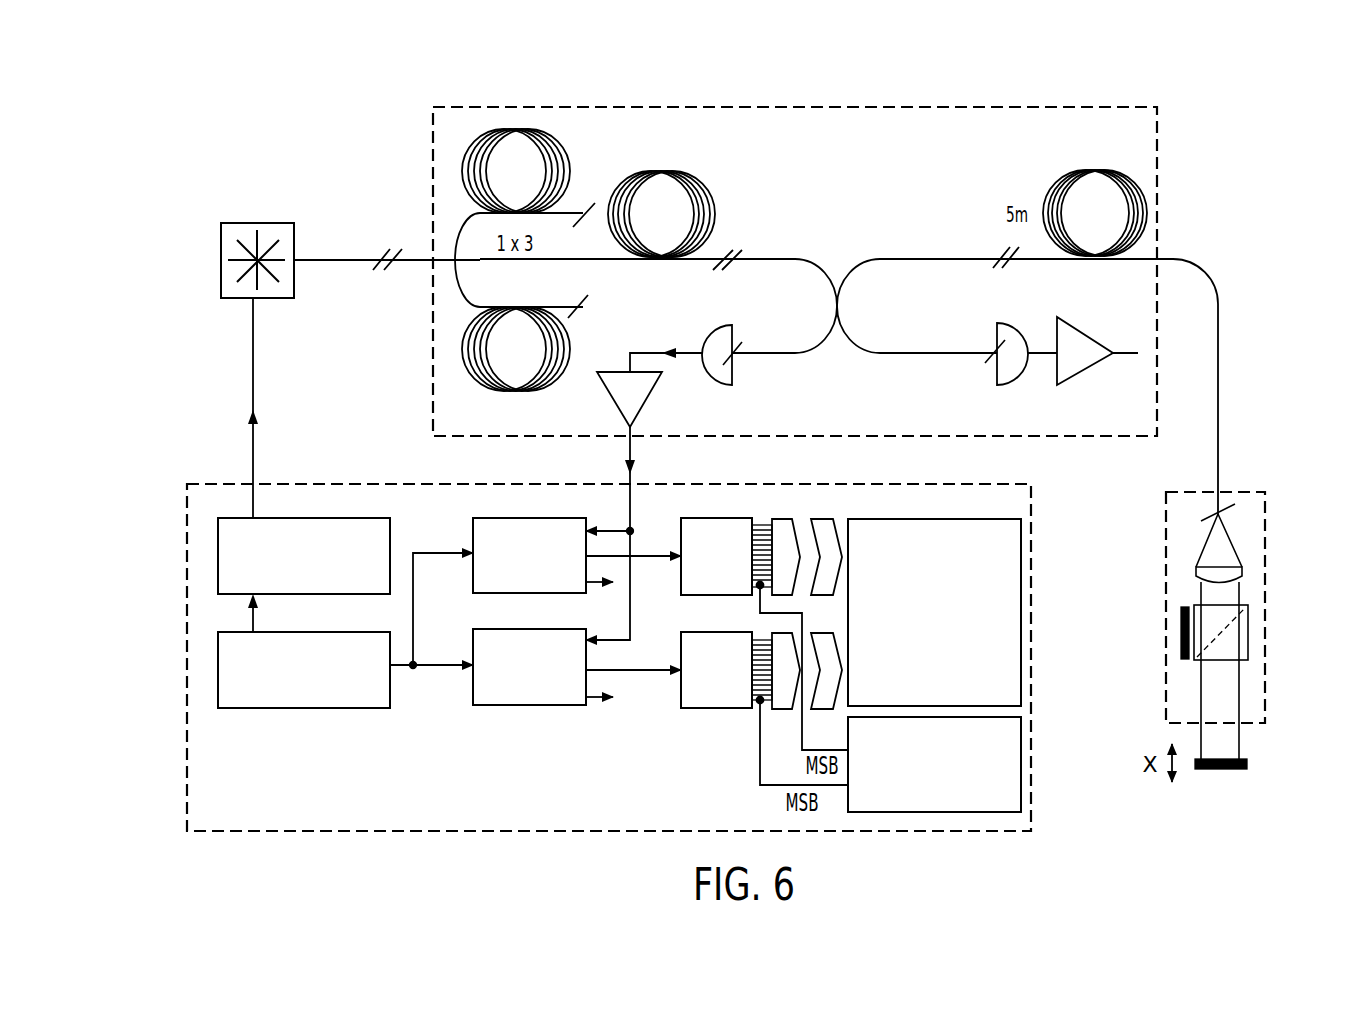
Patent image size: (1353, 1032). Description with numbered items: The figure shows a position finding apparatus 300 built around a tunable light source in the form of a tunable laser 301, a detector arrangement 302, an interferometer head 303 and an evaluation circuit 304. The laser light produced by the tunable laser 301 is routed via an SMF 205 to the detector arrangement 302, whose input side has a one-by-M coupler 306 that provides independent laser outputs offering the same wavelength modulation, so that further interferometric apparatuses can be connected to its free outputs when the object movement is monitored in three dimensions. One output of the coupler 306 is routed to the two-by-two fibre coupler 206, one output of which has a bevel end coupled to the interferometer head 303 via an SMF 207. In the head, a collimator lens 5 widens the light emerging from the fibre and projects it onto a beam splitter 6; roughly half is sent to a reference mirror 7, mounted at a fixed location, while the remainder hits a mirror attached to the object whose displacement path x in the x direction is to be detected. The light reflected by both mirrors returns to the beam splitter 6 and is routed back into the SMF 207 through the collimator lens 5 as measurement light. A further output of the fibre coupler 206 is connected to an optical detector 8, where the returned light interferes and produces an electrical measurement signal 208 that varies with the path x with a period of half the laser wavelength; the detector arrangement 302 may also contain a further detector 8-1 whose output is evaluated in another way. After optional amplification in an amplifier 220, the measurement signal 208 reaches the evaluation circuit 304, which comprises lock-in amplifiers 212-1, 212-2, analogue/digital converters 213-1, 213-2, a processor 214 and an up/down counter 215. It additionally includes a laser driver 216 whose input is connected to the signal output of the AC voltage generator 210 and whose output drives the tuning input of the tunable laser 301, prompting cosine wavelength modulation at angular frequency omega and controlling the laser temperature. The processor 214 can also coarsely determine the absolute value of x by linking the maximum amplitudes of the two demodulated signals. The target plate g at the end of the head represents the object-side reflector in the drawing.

The position finding apparatus 300 is at (1004, 88).
The detector arrangement 302 is at (760, 100).
The tunable laser 301 is at (221, 265).
The SMF 205 is at (352, 258).
The 1×M coupler 306 is at (598, 184).
The 2×2 fibre coupler 206 is at (817, 218).
The SMF 207 is at (1216, 278).
The optical detector 8 is at (710, 325).
The further detector 8-1 is at (1005, 322).
The measurement signal 208 is at (637, 351).
The amplifier 220 is at (637, 395).
The evaluation circuit 304 is at (557, 838).
The laser driver 216 is at (347, 518).
The AC voltage generator 210 is at (342, 710).
The lock-in amplifier 212-1 is at (545, 518).
The lock-in amplifier 212-2 is at (512, 706).
The analogue/digital converter 213-1 is at (728, 518).
The analogue/digital converter 213-2 is at (707, 709).
The processor 214 is at (1022, 541).
The up/down counter 215 is at (918, 812).
The interferometer head 303 is at (1266, 532).
The collimator lens 5 is at (1243, 572).
The beam splitter 6 is at (1206, 661).
The reference mirror 7 is at (1181, 622).
The target surface g is at (1212, 771).